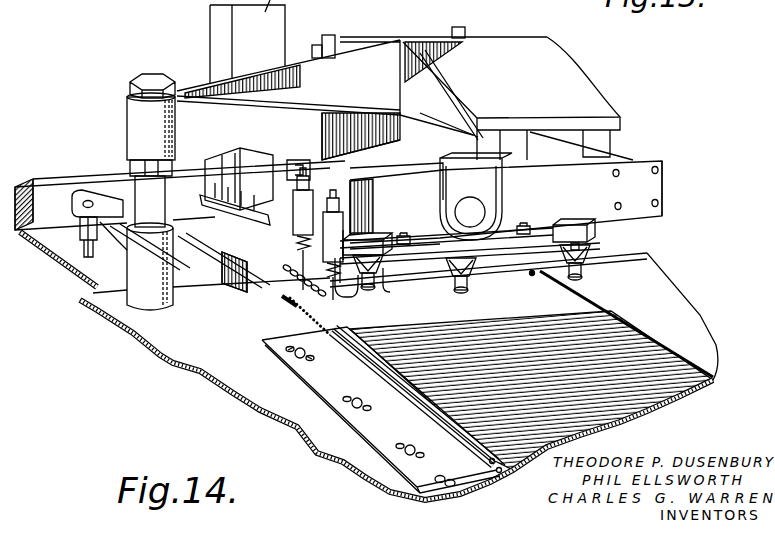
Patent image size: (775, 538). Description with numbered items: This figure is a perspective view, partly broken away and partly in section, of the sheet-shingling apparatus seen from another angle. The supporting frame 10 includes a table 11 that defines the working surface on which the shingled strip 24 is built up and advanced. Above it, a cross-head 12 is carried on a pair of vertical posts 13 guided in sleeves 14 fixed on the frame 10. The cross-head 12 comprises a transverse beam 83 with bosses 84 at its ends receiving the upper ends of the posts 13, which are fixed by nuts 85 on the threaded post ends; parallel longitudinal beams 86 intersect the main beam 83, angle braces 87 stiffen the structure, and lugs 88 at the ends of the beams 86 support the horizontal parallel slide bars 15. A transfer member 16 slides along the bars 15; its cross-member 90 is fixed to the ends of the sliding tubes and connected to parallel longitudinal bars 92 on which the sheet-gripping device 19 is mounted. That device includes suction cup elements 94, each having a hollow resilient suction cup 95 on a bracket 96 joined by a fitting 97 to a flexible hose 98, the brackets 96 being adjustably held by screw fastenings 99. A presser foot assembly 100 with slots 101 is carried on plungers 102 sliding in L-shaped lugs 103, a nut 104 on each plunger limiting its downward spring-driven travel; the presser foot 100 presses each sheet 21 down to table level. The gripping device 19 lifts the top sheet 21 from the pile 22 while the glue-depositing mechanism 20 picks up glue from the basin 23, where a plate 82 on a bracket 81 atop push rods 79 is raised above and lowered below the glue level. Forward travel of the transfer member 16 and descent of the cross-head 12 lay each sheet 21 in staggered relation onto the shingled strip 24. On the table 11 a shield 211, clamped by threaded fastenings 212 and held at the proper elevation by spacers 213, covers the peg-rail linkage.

The supporting frame 10 is at (40, 186).
The table 11 is at (682, 311).
The cross-head 12 is at (200, 88).
The vertical posts 13 is at (140, 183).
The sleeves 14 is at (135, 279).
The horizontal parallel slide bars 15 is at (480, 206).
The transfer member 16 is at (650, 183).
The sheet-gripping device 19 is at (378, 287).
The glue-depositing mechanism 20 is at (212, 172).
The sheet 21 is at (250, 262).
The pile 22 is at (173, 268).
The glue basin 23 is at (118, 241).
The shingled strip 24 is at (655, 354).
The push rods 79 is at (82, 250).
The bracket 81 is at (80, 233).
The plate 82 is at (222, 282).
The transverse beam 83 is at (565, 88).
The bosses 84 is at (132, 109).
The nuts 85 is at (132, 86).
The longitudinal beams 86 is at (438, 99).
The angle braces 87 is at (362, 97).
The lugs 88 is at (498, 183).
The cross-member 90 is at (648, 194).
The longitudinal bars 92 is at (379, 238).
The suction cup elements 94 is at (372, 299).
The suction cup 95 is at (510, 272).
The bracket 96 is at (385, 270).
The fitting 97 is at (578, 254).
The flexible hose 98 is at (533, 275).
The screw fastenings 99 is at (405, 236).
The presser foot assembly 100 is at (351, 294).
The slots 101 is at (300, 307).
The plungers 102 is at (308, 178).
The L-shaped lugs 103 is at (298, 236).
The nut 104 is at (292, 178).
The shield 211 is at (414, 396).
The threaded fastenings 212 is at (357, 397).
The spacers 213 is at (449, 489).